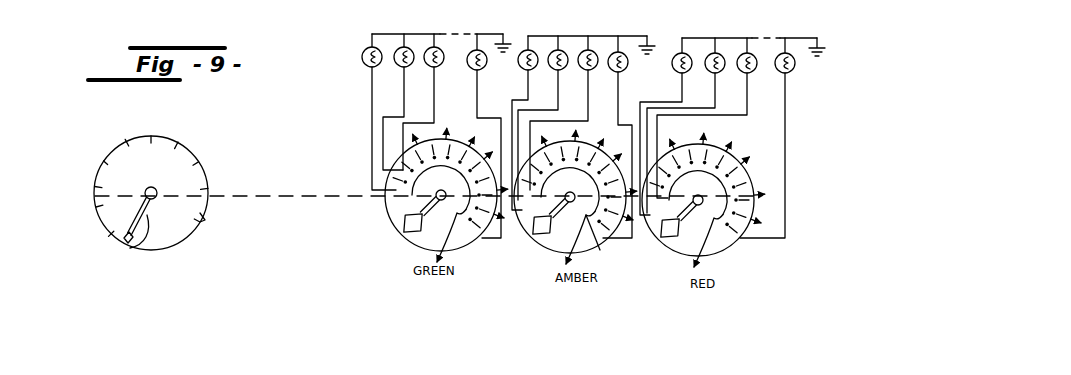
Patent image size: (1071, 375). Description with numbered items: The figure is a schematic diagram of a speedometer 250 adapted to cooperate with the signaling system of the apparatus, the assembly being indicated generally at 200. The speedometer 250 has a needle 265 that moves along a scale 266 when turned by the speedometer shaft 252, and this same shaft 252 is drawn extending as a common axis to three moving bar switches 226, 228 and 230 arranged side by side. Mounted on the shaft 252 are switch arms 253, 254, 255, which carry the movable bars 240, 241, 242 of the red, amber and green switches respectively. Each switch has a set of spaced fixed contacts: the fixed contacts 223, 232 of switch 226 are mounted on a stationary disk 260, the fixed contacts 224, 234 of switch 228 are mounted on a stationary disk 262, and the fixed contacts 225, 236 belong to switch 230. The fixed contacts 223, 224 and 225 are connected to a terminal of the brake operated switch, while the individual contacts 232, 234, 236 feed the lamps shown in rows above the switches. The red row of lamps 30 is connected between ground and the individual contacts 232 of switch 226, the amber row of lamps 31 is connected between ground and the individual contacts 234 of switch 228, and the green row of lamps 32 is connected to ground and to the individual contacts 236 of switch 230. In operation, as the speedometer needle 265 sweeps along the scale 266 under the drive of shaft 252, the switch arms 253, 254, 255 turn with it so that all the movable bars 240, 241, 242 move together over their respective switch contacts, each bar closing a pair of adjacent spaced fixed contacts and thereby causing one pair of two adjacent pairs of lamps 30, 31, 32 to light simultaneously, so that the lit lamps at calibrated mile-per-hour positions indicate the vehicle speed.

The indicator system 200 is at (427, 98).
The speedometer 250 is at (187, 147).
The shaft 252 is at (148, 198).
The speedometer needle 265 is at (126, 243).
The scale 266 is at (200, 222).
The green row of lamps 32 is at (437, 66).
The amber row of lamps 31 is at (622, 72).
The red row of lamps 30 is at (750, 72).
The moving bar switch 230 is at (441, 229).
The individual contacts 236 is at (419, 178).
The movable bar 242 is at (379, 227).
The switch arm 255 is at (396, 240).
The fixed contact 225 is at (456, 282).
The individual contacts 234 is at (585, 128).
The moving bar switch 228 is at (579, 230).
The movable bar 241 is at (531, 238).
The switch arm 254 is at (536, 255).
The stationary disk 262 is at (558, 268).
The fixed contact 224 is at (586, 289).
The fixed contact 223 is at (615, 277).
The stationary disk 260 is at (716, 208).
The individual contacts 232 is at (742, 183).
The movable bar 240 is at (667, 259).
The switch arm 253 is at (698, 254).
The moving bar switch 226 is at (731, 281).